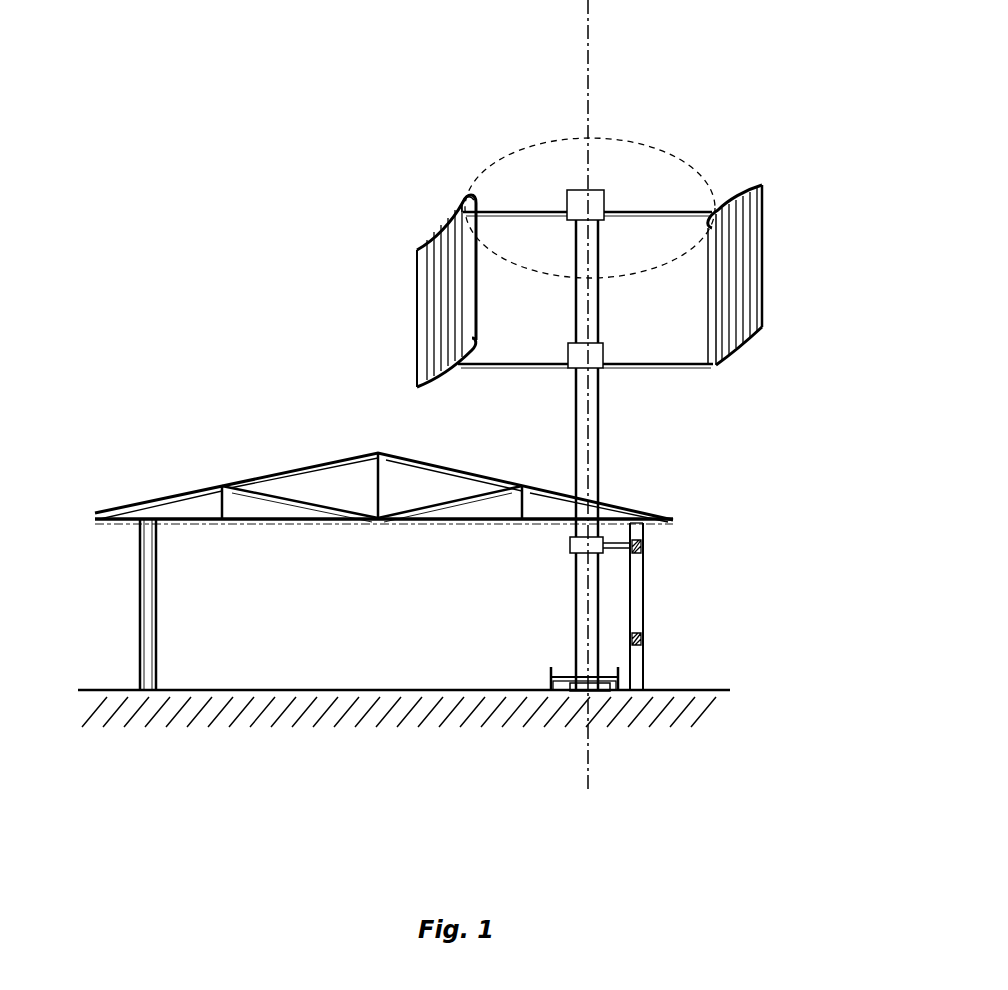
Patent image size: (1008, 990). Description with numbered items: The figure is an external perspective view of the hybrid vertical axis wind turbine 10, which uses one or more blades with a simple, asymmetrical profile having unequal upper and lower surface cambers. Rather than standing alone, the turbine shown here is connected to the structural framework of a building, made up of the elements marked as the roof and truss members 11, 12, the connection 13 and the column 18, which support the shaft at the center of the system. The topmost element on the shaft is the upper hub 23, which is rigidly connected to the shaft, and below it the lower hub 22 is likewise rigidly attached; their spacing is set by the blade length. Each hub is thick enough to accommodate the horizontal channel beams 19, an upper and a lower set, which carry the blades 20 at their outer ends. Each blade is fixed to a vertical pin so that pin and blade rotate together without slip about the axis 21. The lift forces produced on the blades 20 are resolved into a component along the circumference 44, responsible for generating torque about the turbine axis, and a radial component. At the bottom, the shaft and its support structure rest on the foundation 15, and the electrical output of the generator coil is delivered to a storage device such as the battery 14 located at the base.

The hybrid vertical axis wind turbine 10 is at (717, 95).
The structural framework element 11 is at (158, 499).
The structural framework element 12 is at (376, 497).
The structural framework element 13 is at (599, 553).
The battery 14 is at (598, 690).
The foundation 15 is at (492, 714).
The structural framework element 18 is at (164, 640).
The horizontal channel beams 19 is at (667, 218).
The blades 20 is at (764, 285).
The axis 21 is at (594, 793).
The lower hub 22 is at (566, 354).
The upper hub 23 is at (601, 196).
The circumference 44 is at (503, 160).